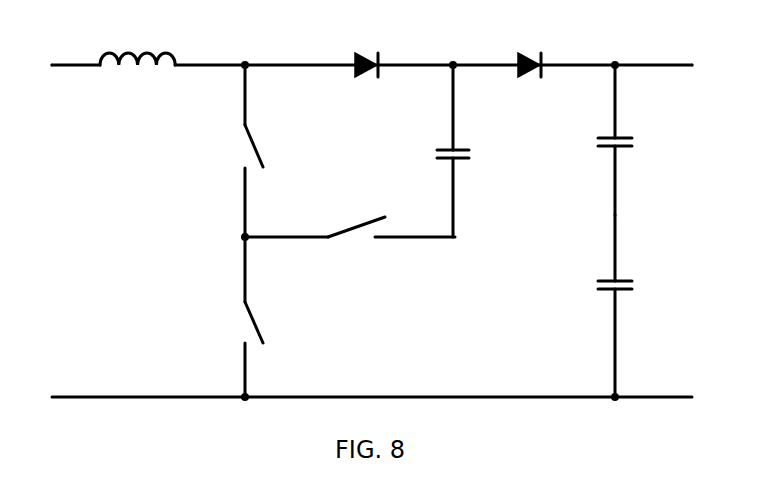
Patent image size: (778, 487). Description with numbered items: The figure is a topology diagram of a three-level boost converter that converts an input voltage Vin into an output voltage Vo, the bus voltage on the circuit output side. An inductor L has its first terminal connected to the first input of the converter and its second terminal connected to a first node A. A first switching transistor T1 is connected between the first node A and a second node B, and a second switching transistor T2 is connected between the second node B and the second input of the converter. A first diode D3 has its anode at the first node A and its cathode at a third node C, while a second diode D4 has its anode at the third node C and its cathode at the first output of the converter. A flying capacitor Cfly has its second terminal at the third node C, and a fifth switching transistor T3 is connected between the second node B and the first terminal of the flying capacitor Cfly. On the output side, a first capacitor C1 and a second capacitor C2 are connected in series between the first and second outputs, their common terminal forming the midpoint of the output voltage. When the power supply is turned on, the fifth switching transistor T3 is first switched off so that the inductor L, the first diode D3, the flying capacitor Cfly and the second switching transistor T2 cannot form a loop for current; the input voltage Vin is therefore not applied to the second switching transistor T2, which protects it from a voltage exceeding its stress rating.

The inductor L is at (137, 43).
The first node A is at (248, 50).
The second node B is at (227, 238).
The third node C is at (453, 50).
The first switching transistor T1 is at (217, 151).
The second switching transistor T2 is at (216, 317).
The fifth switching transistor T3 is at (350, 252).
The first diode D3 is at (370, 49).
The second diode D4 is at (532, 48).
The first capacitor C1 is at (592, 140).
The second capacitor C2 is at (592, 306).
The flying capacitor Cfly is at (472, 151).
The input voltage Vin is at (47, 152).
The output voltage Vo is at (688, 152).